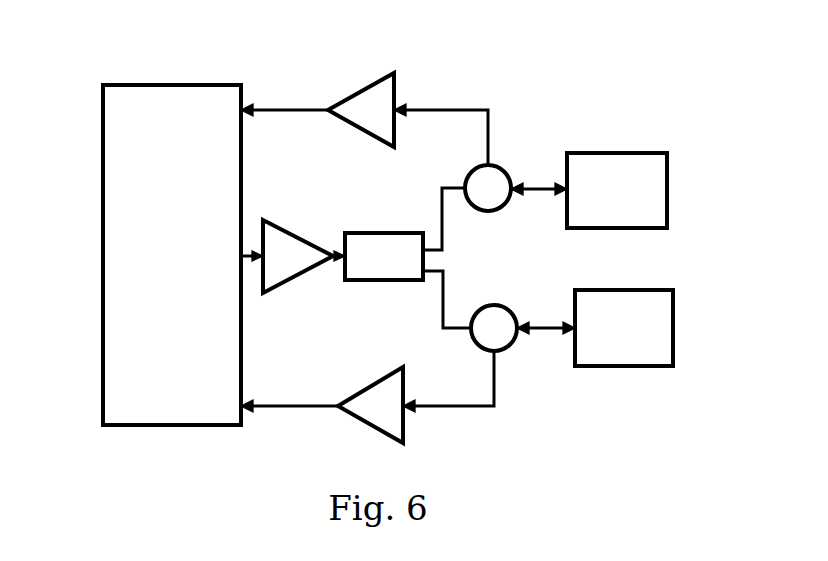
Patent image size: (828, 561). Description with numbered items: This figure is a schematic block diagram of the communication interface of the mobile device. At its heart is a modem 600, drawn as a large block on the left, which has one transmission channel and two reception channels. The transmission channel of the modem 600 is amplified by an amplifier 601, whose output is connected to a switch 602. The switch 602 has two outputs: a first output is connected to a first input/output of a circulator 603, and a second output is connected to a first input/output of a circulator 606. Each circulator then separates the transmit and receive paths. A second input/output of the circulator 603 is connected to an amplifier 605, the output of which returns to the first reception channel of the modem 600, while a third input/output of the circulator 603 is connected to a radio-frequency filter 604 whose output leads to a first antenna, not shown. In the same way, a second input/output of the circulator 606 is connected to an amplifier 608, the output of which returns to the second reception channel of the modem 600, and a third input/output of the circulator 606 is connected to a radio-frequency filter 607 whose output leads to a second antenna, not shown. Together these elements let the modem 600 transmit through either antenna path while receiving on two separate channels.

The modem 600 is at (200, 85).
The amplifier 601 is at (306, 240).
The switch 602 is at (386, 233).
The circulator 603 is at (470, 172).
The radio-frequency filter 604 is at (610, 153).
The amplifier 605 is at (355, 95).
The circulator 606 is at (493, 305).
The radio-frequency filter 607 is at (613, 290).
The amplifier 608 is at (370, 390).